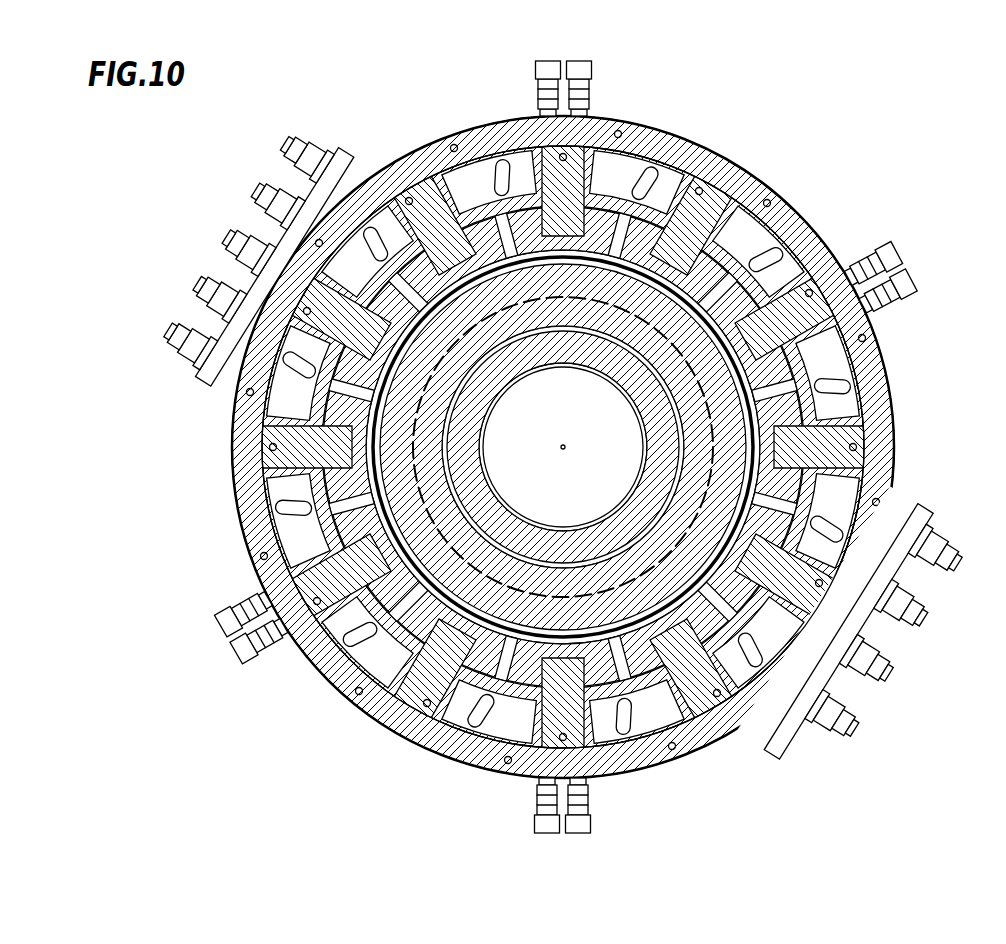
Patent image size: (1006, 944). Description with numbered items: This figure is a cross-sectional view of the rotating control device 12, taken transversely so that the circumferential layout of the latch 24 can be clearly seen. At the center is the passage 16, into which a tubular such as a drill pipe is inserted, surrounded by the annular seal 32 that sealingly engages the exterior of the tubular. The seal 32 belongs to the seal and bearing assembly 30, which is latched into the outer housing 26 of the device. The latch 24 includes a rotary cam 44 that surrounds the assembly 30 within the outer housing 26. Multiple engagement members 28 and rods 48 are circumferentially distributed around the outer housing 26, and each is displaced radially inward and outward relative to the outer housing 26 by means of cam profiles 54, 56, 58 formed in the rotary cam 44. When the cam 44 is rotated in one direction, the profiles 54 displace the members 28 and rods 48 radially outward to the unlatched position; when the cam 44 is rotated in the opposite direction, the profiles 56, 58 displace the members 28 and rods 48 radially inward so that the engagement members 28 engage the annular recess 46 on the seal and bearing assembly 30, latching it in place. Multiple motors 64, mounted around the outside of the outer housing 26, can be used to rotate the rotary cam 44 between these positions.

The rotating control device 12 is at (851, 94).
The passage 16 is at (578, 428).
The latch 24 is at (658, 778).
The outer housing 26 is at (827, 482).
The engagement member 28 is at (568, 258).
The seal and bearing assembly 30 is at (757, 205).
The annular seal 32 is at (577, 520).
The rotary cam 44 is at (400, 700).
The annular recess 46 is at (420, 700).
The rod 48 is at (445, 165).
The cam profile 54 is at (470, 172).
The cam profile 56 is at (505, 170).
The cam profile 58 is at (393, 214).
The motor 64 is at (592, 100).